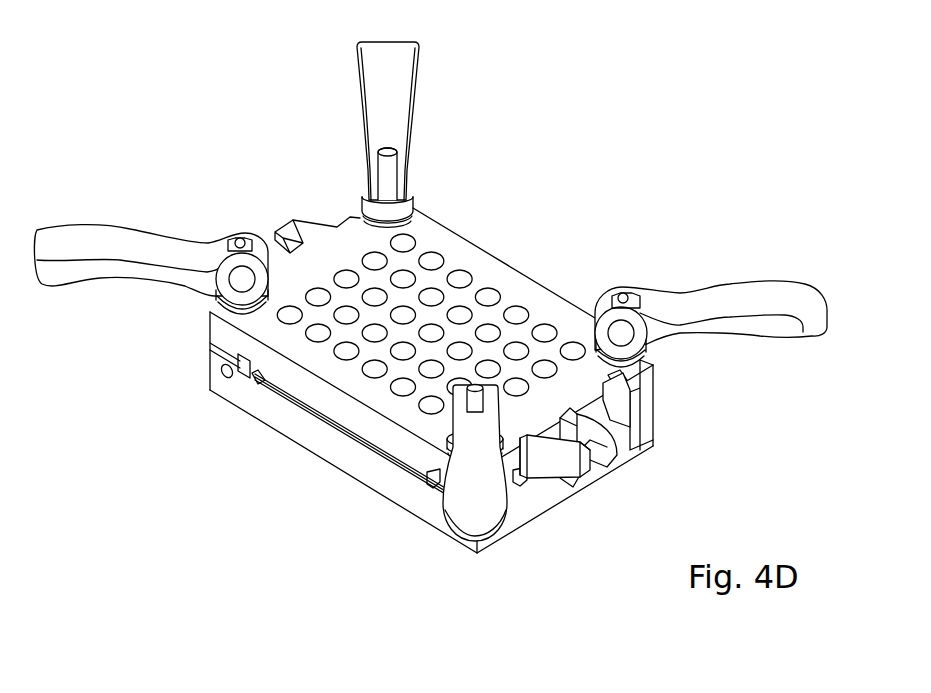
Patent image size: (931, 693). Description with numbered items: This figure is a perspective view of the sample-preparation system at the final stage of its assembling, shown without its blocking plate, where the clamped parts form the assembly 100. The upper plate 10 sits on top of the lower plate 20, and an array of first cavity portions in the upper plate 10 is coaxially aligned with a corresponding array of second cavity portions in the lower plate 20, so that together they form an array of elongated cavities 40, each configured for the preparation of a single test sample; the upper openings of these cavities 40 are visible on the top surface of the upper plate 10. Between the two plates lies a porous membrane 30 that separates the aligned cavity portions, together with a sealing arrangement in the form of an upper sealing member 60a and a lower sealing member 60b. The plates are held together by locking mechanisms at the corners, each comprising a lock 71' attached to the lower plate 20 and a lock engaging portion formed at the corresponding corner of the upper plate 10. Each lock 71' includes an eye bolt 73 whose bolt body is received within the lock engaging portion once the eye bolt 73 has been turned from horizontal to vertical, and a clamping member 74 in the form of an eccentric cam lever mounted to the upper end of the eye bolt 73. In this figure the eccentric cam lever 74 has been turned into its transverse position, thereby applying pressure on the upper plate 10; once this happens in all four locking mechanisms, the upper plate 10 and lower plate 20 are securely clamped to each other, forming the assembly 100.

The assembly 100 is at (193, 110).
The upper plate 10 is at (447, 238).
The elongated cavities 40 is at (490, 294).
The lower plate 20 is at (280, 413).
The porous membrane 30 is at (317, 413).
The upper sealing member 60a is at (260, 376).
The lower sealing member 60b is at (263, 387).
The lock 71' is at (720, 279).
The clamping member 74 is at (788, 303).
The eye bolt 73 is at (652, 372).